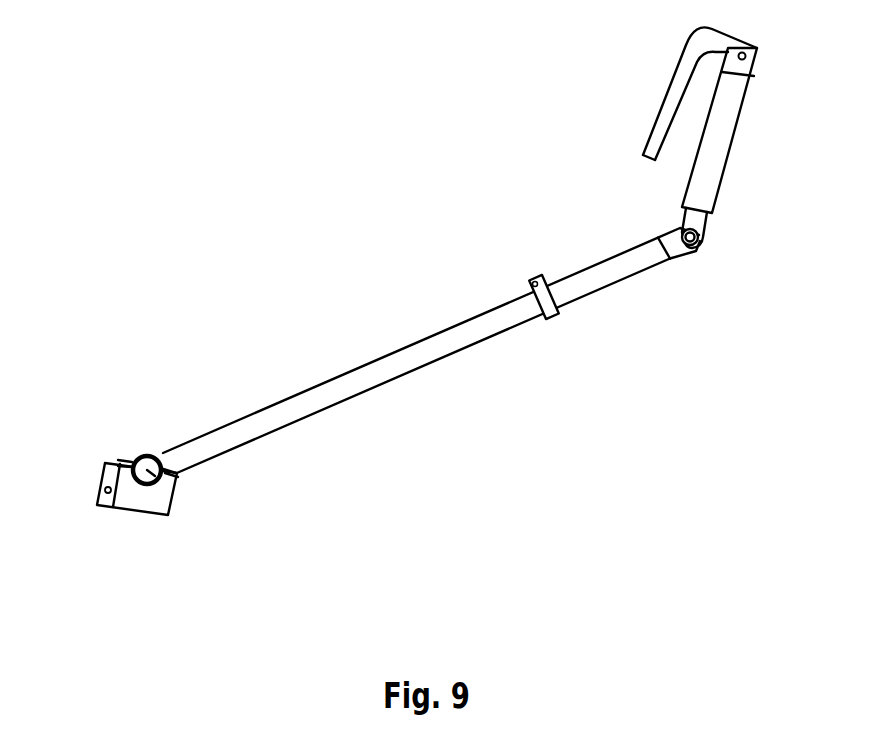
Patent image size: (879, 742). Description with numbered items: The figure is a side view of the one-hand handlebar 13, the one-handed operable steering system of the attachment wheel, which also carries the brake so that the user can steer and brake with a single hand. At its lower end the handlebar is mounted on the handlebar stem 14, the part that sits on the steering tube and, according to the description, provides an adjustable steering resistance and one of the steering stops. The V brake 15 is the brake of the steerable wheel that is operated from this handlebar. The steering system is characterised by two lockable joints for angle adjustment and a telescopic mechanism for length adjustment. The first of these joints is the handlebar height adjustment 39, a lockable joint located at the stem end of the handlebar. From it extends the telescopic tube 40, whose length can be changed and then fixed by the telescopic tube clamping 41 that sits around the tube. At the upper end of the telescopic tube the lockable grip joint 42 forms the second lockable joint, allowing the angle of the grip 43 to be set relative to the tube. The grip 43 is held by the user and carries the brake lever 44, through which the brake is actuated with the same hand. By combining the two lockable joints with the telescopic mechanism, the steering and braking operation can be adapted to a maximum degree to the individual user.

The one-hand handlebar 13 is at (480, 295).
The handlebar stem 14 is at (105, 463).
The V brake 15 is at (122, 462).
The handlebar height adjustment 39 is at (175, 482).
The telescopic tube 40 is at (610, 256).
The telescopic tube clamping 41 is at (552, 317).
The lockable grip joint 42 is at (697, 242).
The grip 43 is at (735, 142).
The brake lever 44 is at (690, 42).